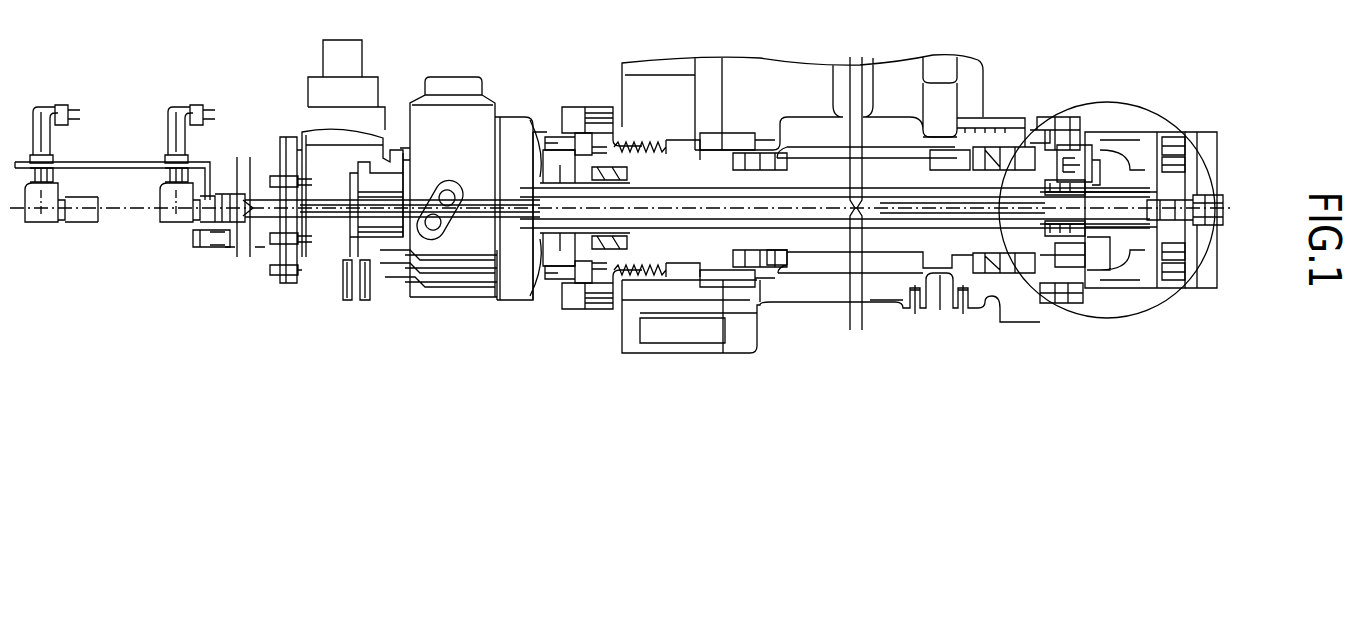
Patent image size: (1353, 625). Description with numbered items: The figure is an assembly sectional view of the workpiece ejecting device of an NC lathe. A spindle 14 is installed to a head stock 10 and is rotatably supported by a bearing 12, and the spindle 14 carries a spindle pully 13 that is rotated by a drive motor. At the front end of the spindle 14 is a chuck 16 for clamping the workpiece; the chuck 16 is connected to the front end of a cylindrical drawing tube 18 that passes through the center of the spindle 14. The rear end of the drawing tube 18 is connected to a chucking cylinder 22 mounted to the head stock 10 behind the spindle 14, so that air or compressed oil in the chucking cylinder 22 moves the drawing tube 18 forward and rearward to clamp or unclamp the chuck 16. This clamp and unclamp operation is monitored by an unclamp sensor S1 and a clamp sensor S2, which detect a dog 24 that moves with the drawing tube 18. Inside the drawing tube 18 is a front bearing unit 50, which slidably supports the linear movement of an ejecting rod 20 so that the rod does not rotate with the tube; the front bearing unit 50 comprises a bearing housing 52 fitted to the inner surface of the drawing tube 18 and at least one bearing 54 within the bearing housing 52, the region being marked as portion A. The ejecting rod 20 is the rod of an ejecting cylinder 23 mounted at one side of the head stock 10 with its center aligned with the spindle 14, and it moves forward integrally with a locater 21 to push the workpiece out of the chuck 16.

The head stock 10 is at (876, 302).
The bearing 12 is at (755, 270).
The spindle pully 13 is at (645, 255).
The spindle 14 is at (912, 242).
The chuck 16 is at (1132, 280).
The drawing tube 18 is at (823, 235).
The ejecting rod 20 is at (890, 225).
The locater 21 is at (1217, 197).
The chucking cylinder 22 is at (470, 277).
The ejecting cylinder 23 is at (250, 258).
The dog 24 is at (323, 257).
The front bearing unit 50 is at (1053, 303).
The bearing housing 52 is at (1107, 163).
The bearing 54 is at (1063, 150).
The portion A is at (1165, 305).
The unclamp sensor S1 is at (368, 305).
The clamp sensor S2 is at (348, 303).